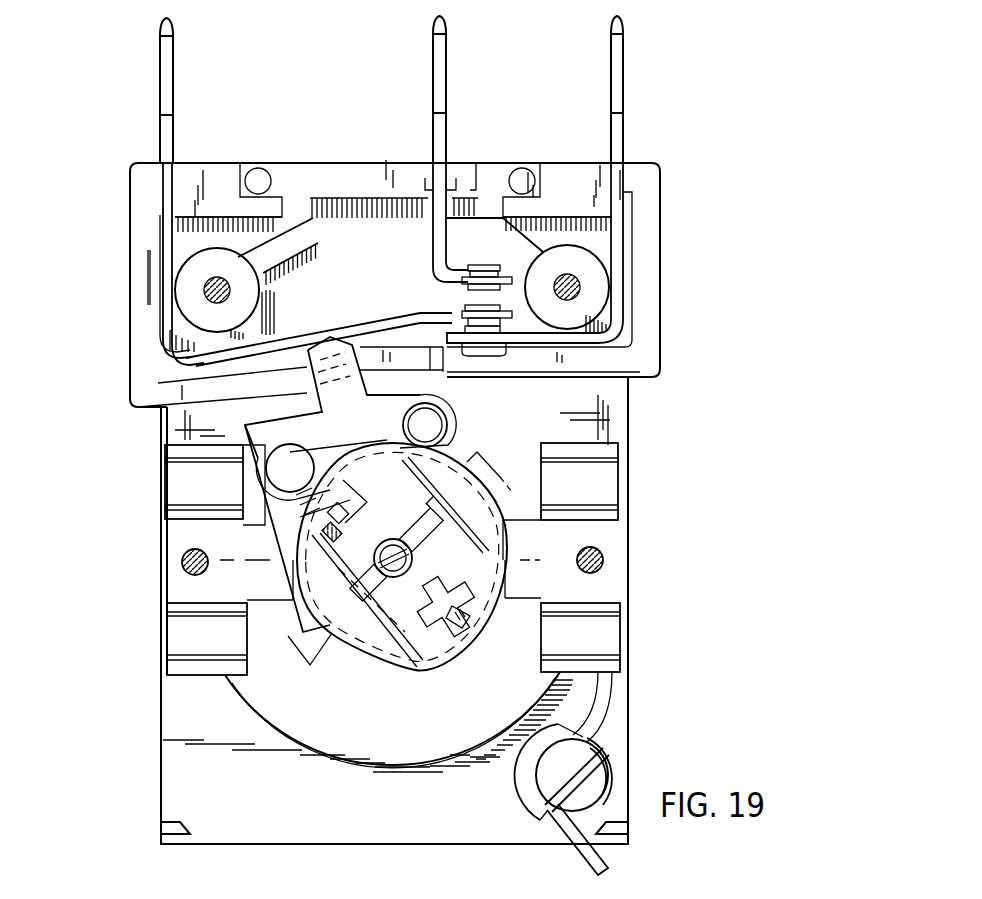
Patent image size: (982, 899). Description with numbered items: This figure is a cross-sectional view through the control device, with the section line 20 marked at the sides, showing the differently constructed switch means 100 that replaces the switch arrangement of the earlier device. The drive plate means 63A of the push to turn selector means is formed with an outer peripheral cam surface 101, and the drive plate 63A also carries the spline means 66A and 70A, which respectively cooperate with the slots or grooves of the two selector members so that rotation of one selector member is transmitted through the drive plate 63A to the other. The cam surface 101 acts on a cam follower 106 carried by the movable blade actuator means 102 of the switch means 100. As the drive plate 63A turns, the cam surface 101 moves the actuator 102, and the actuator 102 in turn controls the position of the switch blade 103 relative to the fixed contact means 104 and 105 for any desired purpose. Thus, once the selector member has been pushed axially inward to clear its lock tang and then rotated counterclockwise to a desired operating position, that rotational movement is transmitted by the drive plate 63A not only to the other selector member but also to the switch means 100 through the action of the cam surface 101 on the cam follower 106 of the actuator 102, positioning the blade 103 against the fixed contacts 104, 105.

The switch means 100 is at (427, 288).
The outer peripheral cam surface 101 is at (450, 656).
The movable blade actuator means 102 is at (293, 430).
The switch blade 103 is at (393, 313).
The fixed contact means 104 is at (508, 332).
The fixed contact means 105 is at (484, 265).
The cam follower 106 is at (452, 418).
The drive plate means 63A is at (393, 657).
The spline means 66A is at (413, 466).
The spline means 70A is at (313, 507).
The section line 20- 20 is at (150, 563).